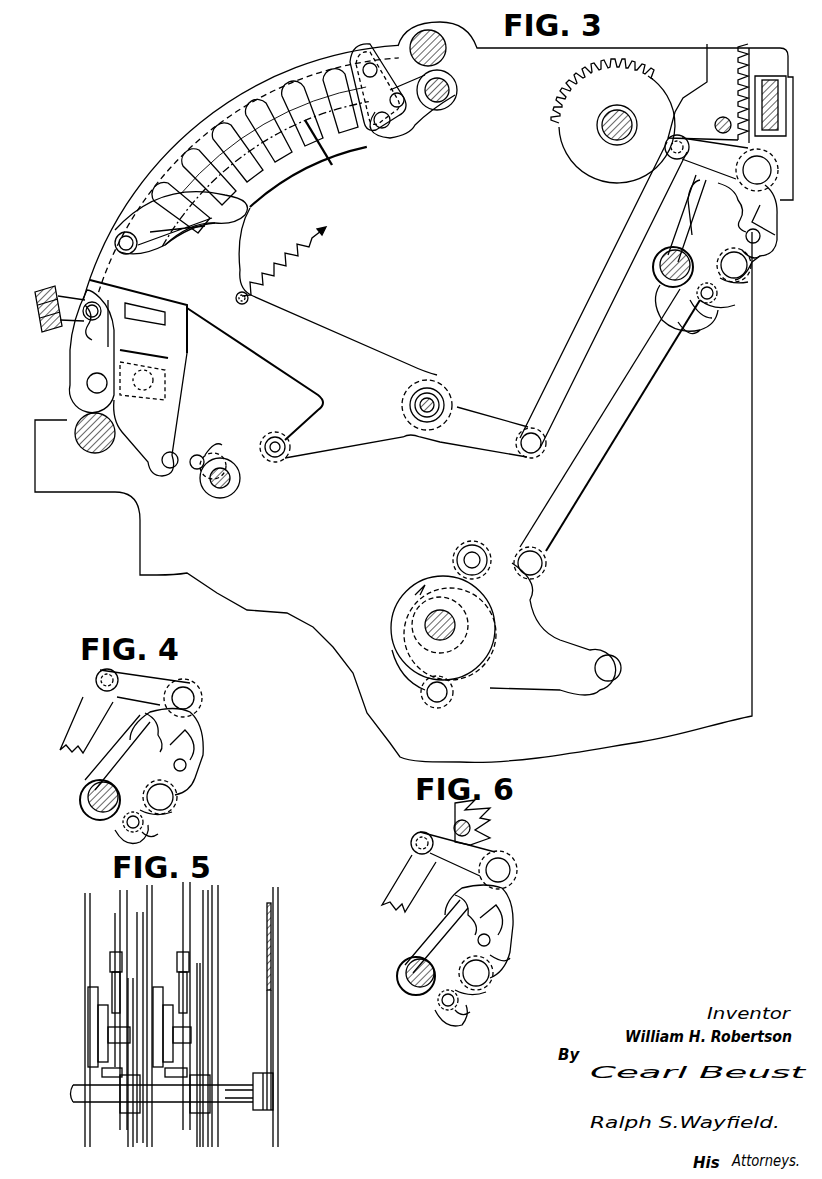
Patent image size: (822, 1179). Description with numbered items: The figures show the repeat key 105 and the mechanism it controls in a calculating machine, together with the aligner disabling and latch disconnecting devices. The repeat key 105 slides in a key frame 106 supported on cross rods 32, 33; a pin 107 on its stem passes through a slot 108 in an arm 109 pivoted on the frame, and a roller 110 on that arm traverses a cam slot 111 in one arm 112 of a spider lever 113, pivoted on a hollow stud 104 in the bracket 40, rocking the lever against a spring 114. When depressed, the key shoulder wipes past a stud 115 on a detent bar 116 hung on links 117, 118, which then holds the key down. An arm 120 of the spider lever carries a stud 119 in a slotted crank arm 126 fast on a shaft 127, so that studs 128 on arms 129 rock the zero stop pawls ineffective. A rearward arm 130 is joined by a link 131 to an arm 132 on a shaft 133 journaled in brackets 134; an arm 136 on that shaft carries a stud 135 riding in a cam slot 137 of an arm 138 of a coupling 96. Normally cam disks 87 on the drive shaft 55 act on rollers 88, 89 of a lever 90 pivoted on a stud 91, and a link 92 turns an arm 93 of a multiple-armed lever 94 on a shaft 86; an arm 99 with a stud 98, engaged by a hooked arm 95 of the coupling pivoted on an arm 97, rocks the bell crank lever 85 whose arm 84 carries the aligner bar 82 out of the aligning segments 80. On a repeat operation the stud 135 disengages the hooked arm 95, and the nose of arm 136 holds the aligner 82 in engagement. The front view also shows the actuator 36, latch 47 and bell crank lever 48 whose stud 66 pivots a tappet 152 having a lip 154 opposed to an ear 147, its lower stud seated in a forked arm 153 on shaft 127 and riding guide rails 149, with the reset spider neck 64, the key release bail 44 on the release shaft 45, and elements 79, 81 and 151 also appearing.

In FIG. 3, the cross rod 32 is at (460, 62).
In FIG. 3, the cross rod 33 is at (106, 450).
In FIG. 5, the totalizer actuator 36 is at (120, 898).
In FIG. 5, the bracket 40 is at (84, 912).
In FIG. 3, the key release bail 44 is at (418, 60).
In FIG. 3, the release shaft 45 is at (452, 88).
In FIG. 5, the latch 47 is at (88, 1010).
In FIG. 5, the bell crank lever 48 is at (98, 1027).
In FIG. 3, the drive shaft 55 is at (436, 638).
In FIG. 5, the neck 64 is at (201, 966).
In FIG. 5, the stud 66 is at (108, 1038).
In FIG. 3, the gear 79 is at (602, 143).
In FIG. 3, the aligning segment 80 is at (680, 83).
In FIG. 6, the aligning segment 80 is at (478, 812).
In FIG. 3, the gear shaft 81 is at (625, 97).
In FIG. 3, the aligner bar 82 is at (730, 205).
In FIG. 4, the aligner bar 82 is at (148, 716).
In FIG. 6, the aligner bar 82 is at (450, 893).
In FIG. 3, the arm 84 is at (685, 232).
In FIG. 4, the arm 84 is at (135, 738).
In FIG. 6, the arm 84 is at (445, 918).
In FIG. 3, the bell crank lever 85 is at (652, 285).
In FIG. 4, the bell crank lever 85 is at (80, 800).
In FIG. 6, the bell crank lever 85 is at (397, 975).
In FIG. 3, the shaft 86 is at (660, 266).
In FIG. 4, the shaft 86 is at (90, 786).
In FIG. 6, the shaft 86 is at (410, 962).
In FIG. 3, the cam disk 87 is at (405, 650).
In FIG. 3, the roller 88 is at (478, 548).
In FIG. 3, the roller 89 is at (430, 702).
In FIG. 3, the lever 90 is at (528, 668).
In FIG. 3, the stud 91 is at (614, 660).
In FIG. 3, the link 92 is at (642, 388).
In FIG. 3, the arm 93 is at (685, 335).
In FIG. 3, the multiple-armed lever 94 is at (663, 296).
In FIG. 3, the hooked arm 95 is at (748, 308).
In FIG. 4, the hooked arm 95 is at (125, 840).
In FIG. 6, the hooked arm 95 is at (458, 1030).
In FIG. 3, the coupling 96 is at (748, 297).
In FIG. 4, the coupling 96 is at (168, 812).
In FIG. 6, the coupling 96 is at (478, 995).
In FIG. 3, the arm 97 is at (748, 282).
In FIG. 4, the arm 97 is at (175, 795).
In FIG. 6, the arm 97 is at (490, 975).
In FIG. 3, the stud 98 is at (710, 302).
In FIG. 4, the stud 98 is at (124, 826).
In FIG. 6, the stud 98 is at (440, 1004).
In FIG. 3, the arm 99 is at (700, 325).
In FIG. 4, the arm 99 is at (152, 832).
In FIG. 6, the arm 99 is at (466, 1013).
In FIG. 3, the hollow stud 104 is at (414, 388).
In FIG. 3, the repeat key 105 is at (48, 285).
In FIG. 3, the key frame 106 is at (272, 82).
In FIG. 3, the pin 107 is at (84, 300).
In FIG. 3, the slot 108 is at (80, 336).
In FIG. 3, the arm 109 is at (85, 357).
In FIG. 3, the roller 110 is at (114, 243).
In FIG. 3, the cam slot 111 is at (183, 240).
In FIG. 3, the arm 112 is at (300, 326).
In FIG. 5, the arm 112 is at (272, 952).
In FIG. 3, the spider lever 113 is at (433, 385).
In FIG. 3, the spring 114 is at (310, 245).
In FIG. 3, the stud 115 is at (143, 345).
In FIG. 3, the detent bar 116 is at (326, 160).
In FIG. 3, the link 117 is at (410, 140).
In FIG. 3, the link 118 is at (135, 425).
In FIG. 3, the stud 119 is at (290, 460).
In FIG. 3, the arm 120 is at (345, 442).
In FIG. 5, the arm 120 is at (278, 1022).
In FIG. 3, the crank arm 126 is at (245, 455).
In FIG. 5, the crank arm 126 is at (258, 1070).
In FIG. 3, the shaft 127 is at (228, 480).
In FIG. 5, the shaft 127 is at (241, 1104).
In FIG. 3, the stud 128 is at (210, 460).
In FIG. 5, the stud 128 is at (175, 1092).
In FIG. 3, the arm 129 is at (198, 455).
In FIG. 5, the arm 129 is at (187, 1102).
In FIG. 3, the arm 130 is at (514, 400).
In FIG. 3, the link 131 is at (568, 352).
In FIG. 4, the link 131 is at (86, 708).
In FIG. 6, the link 131 is at (408, 870).
In FIG. 3, the arm 132 is at (706, 138).
In FIG. 4, the arm 132 is at (158, 678).
In FIG. 6, the arm 132 is at (490, 850).
In FIG. 3, the shaft 133 is at (743, 173).
In FIG. 4, the shaft 133 is at (198, 697).
In FIG. 6, the shaft 133 is at (512, 870).
In FIG. 3, the bracket 134 is at (778, 90).
In FIG. 3, the stud 135 is at (760, 240).
In FIG. 6, the stud 135 is at (492, 940).
In FIG. 3, the arm 136 is at (760, 230).
In FIG. 4, the arm 136 is at (205, 745).
In FIG. 6, the arm 136 is at (508, 920).
In FIG. 3, the cam slot 137 is at (752, 213).
In FIG. 6, the cam slot 137 is at (485, 915).
In FIG. 3, the arm 138 is at (760, 260).
In FIG. 6, the arm 138 is at (505, 960).
In FIG. 5, the laterally turned ear 147 is at (108, 958).
In FIG. 5, the guide rail 149 is at (148, 923).
In FIG. 5, the hub 151 is at (193, 1052).
In FIG. 5, the tappet 152 is at (190, 1015).
In FIG. 3, the forked arm 153 is at (213, 443).
In FIG. 5, the forked arm 153 is at (211, 1082).
In FIG. 5, the laterally turned lip 154 is at (190, 1000).